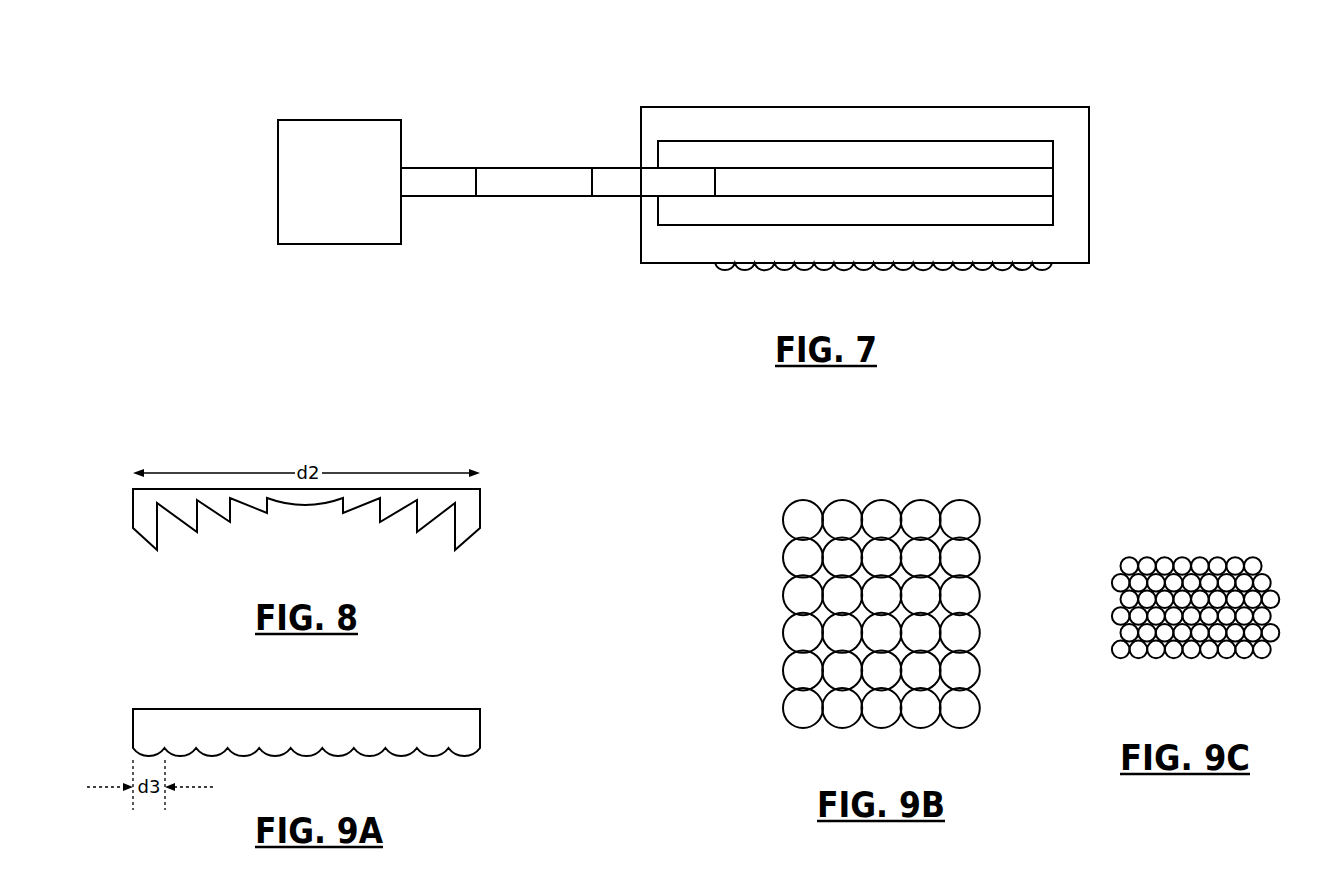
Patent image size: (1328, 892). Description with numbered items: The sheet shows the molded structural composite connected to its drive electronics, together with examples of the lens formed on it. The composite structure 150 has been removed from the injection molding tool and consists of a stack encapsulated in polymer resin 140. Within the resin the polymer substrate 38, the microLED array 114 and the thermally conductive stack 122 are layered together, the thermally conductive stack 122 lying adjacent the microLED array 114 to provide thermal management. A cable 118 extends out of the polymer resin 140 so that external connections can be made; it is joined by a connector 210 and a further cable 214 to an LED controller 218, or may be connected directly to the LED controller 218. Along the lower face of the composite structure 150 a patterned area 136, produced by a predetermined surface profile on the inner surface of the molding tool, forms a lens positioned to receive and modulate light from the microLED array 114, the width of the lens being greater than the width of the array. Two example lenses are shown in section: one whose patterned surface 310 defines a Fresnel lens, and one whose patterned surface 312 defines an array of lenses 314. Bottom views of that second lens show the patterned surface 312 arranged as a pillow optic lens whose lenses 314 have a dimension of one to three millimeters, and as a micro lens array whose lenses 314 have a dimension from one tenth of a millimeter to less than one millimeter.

In FIG. 7, the composite structure 150 is at (865, 142).
In FIG. 7, the polymer resin 140 is at (819, 118).
In FIG. 7, the polymer substrate 38 is at (1053, 154).
In FIG. 7, the microLED array 114 is at (1053, 182).
In FIG. 7, the thermally conductive stack 122 is at (1053, 210).
In FIG. 7, the cable 118 is at (628, 166).
In FIG. 7, the connector 210 is at (543, 197).
In FIG. 7, the cable 214 is at (450, 197).
In FIG. 7, the LED controller 218 is at (323, 245).
In FIG. 7, the patterned area 136 is at (740, 268).
In FIG. 8, the patterned area 136 is at (307, 491).
In FIG. 9A, the patterned area 136 is at (319, 717).
In FIG. 8, the patterned surface 310 is at (381, 552).
In FIG. 9A, the patterned surface 312 is at (350, 754).
In FIG. 9B, the patterned surface 312 is at (796, 473).
In FIG. 9C, the patterned surface 312 is at (1153, 511).
In FIG. 9A, the lenses 314 is at (338, 757).